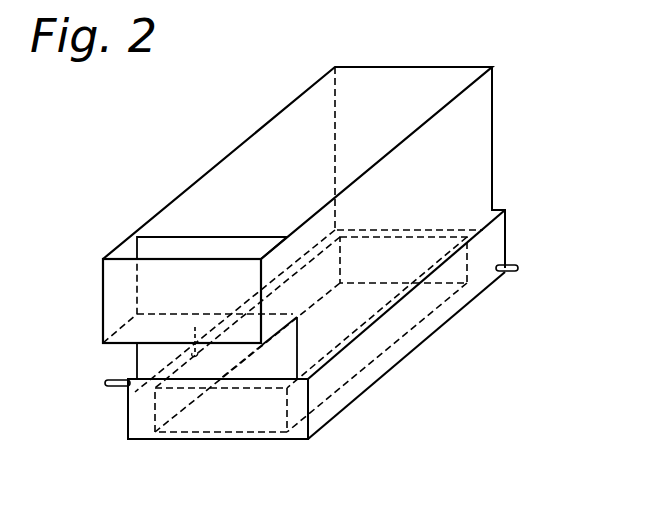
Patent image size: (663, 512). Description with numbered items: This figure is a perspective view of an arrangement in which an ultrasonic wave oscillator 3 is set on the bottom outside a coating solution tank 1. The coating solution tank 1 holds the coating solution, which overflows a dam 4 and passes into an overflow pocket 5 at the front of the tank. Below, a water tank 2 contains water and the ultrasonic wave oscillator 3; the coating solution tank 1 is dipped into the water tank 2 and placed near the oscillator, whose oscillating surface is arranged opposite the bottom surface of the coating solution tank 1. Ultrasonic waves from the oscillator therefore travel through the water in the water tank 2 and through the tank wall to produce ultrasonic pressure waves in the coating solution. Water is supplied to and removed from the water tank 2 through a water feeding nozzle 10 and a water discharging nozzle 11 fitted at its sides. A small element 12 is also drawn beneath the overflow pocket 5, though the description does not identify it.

The coating solution tank 1 is at (492, 110).
The water tank 2 is at (418, 346).
The ultrasonic wave oscillator 3 is at (373, 357).
The dam 4 is at (158, 237).
The overflow pocket 5 is at (127, 253).
The water feeding nozzle 10 is at (520, 263).
The water discharging nozzle 11 is at (106, 386).
The small pin 12 is at (197, 347).